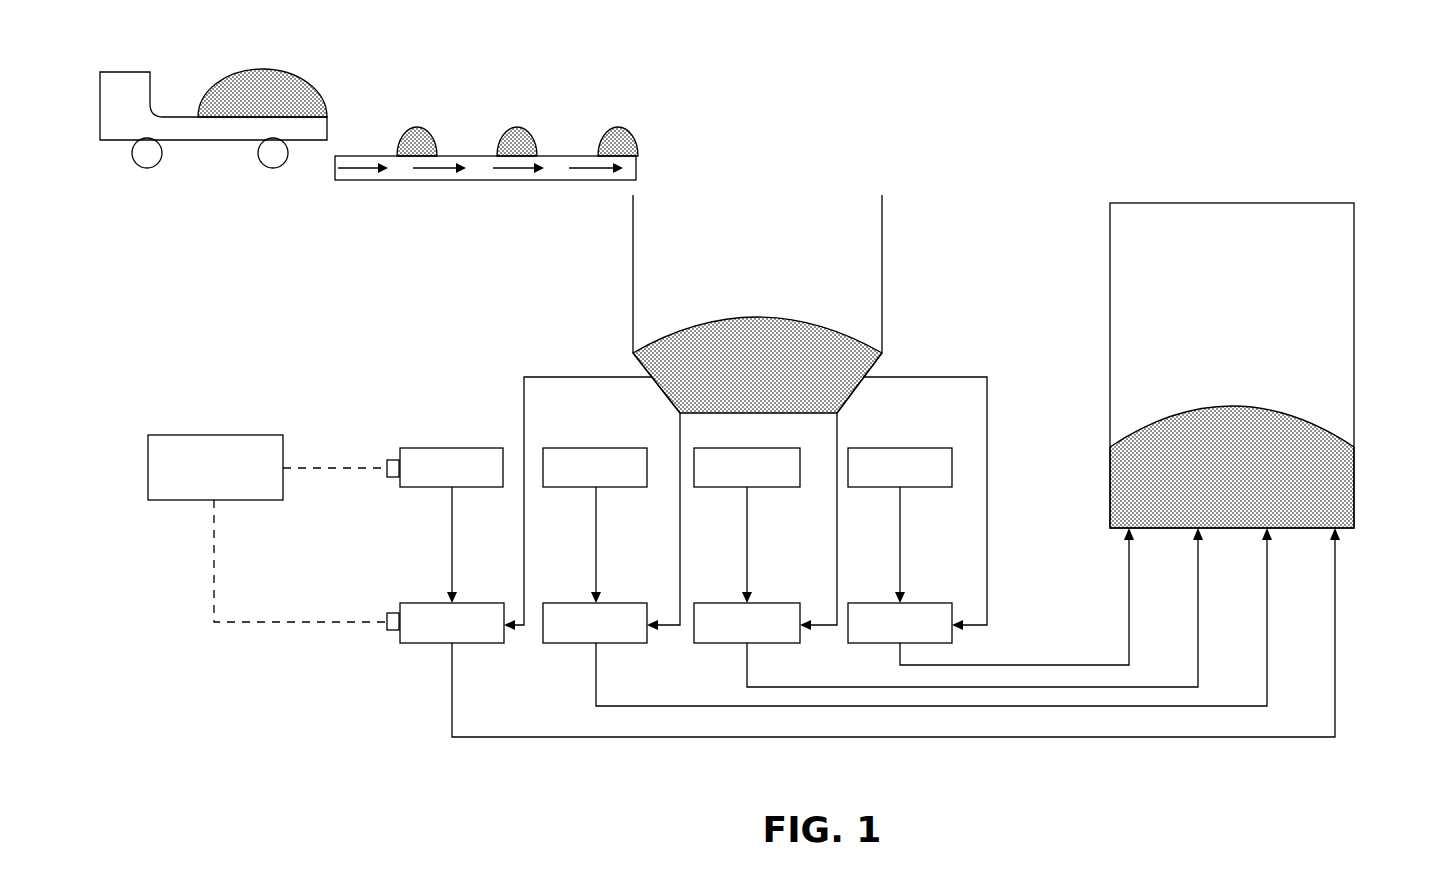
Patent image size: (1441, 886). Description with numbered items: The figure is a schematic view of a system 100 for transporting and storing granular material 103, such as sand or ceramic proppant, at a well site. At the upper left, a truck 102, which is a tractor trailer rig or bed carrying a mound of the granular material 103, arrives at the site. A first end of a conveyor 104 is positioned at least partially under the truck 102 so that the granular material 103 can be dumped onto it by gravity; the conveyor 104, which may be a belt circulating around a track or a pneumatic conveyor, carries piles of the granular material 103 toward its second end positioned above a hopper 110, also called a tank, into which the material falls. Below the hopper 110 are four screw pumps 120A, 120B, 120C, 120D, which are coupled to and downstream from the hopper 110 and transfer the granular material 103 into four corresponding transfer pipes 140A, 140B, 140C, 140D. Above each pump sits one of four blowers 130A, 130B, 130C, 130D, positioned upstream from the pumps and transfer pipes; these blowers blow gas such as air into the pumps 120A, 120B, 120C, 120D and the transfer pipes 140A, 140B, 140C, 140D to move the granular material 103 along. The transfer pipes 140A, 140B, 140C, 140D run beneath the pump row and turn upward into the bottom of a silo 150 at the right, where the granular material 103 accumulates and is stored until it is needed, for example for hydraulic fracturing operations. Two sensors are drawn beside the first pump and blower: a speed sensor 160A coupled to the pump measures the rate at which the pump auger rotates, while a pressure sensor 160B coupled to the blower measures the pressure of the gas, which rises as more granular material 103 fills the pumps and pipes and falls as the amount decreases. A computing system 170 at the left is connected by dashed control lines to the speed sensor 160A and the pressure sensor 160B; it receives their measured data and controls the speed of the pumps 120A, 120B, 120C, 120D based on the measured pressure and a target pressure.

The system 100 is at (855, 36).
The truck 102 is at (211, 141).
The granular material 103 is at (268, 71).
The conveyor 104 is at (462, 156).
The hopper 110 is at (882, 243).
The pump 120A is at (465, 603).
The pump 120B is at (566, 643).
The pump 120C is at (723, 643).
The pump 120D is at (860, 603).
The blower 130A is at (452, 448).
The blower 130B is at (596, 448).
The blower 130C is at (733, 488).
The blower 130D is at (900, 448).
The transfer pipe 140A is at (452, 720).
The transfer pipe 140B is at (1268, 645).
The transfer pipe 140C is at (870, 690).
The transfer pipe 140D is at (1129, 598).
The silo 150 is at (1232, 203).
The speed sensor 160A is at (393, 632).
The pressure sensor 160B is at (393, 480).
The computing system 170 is at (215, 435).